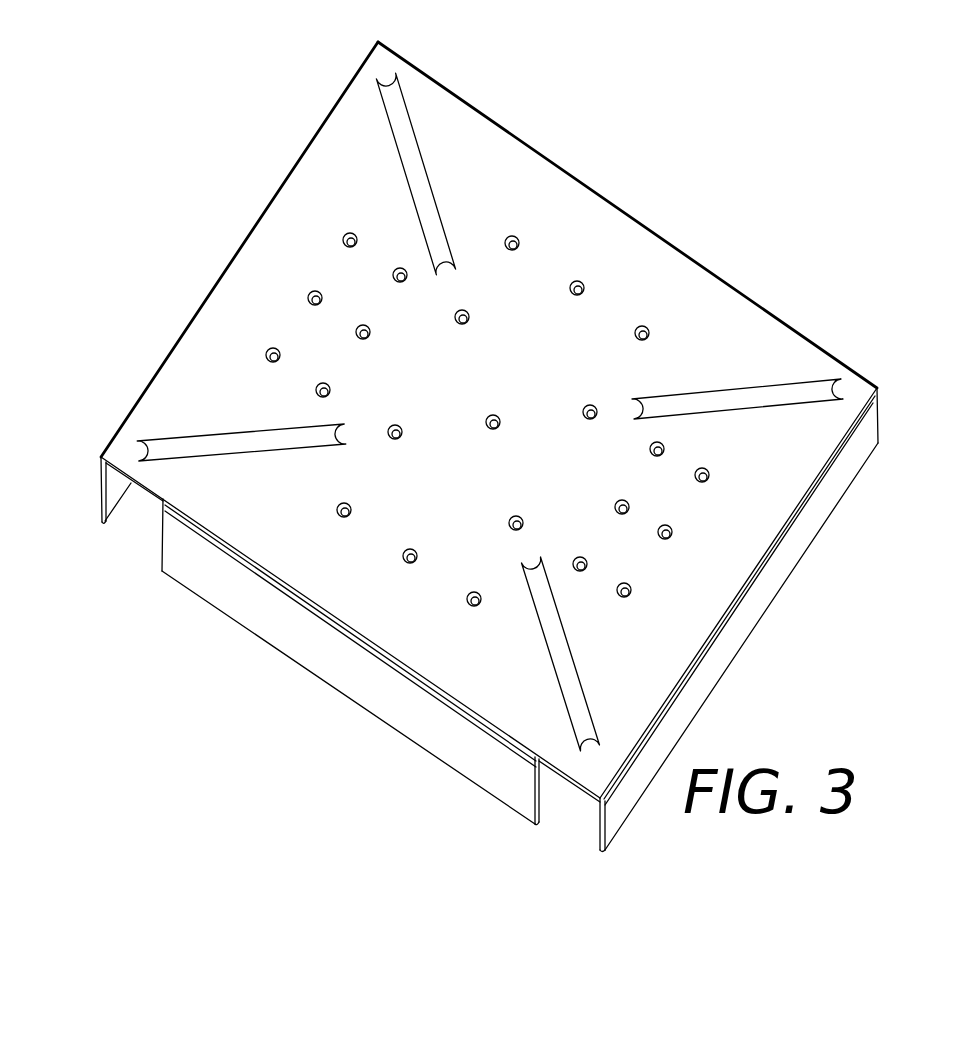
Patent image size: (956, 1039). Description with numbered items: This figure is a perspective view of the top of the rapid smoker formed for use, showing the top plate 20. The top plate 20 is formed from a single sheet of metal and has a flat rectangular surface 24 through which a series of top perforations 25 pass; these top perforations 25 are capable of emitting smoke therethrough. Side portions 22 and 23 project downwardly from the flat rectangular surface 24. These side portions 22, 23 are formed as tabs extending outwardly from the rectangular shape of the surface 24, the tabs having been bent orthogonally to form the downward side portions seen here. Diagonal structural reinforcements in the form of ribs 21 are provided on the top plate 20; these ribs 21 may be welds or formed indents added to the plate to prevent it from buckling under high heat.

The top plate 20 is at (461, 439).
The ribs 21 is at (400, 150).
The side portion 22 is at (161, 543).
The side portion 23 is at (100, 487).
The flat rectangular surface 24 is at (582, 247).
The top perforations 25 is at (698, 482).